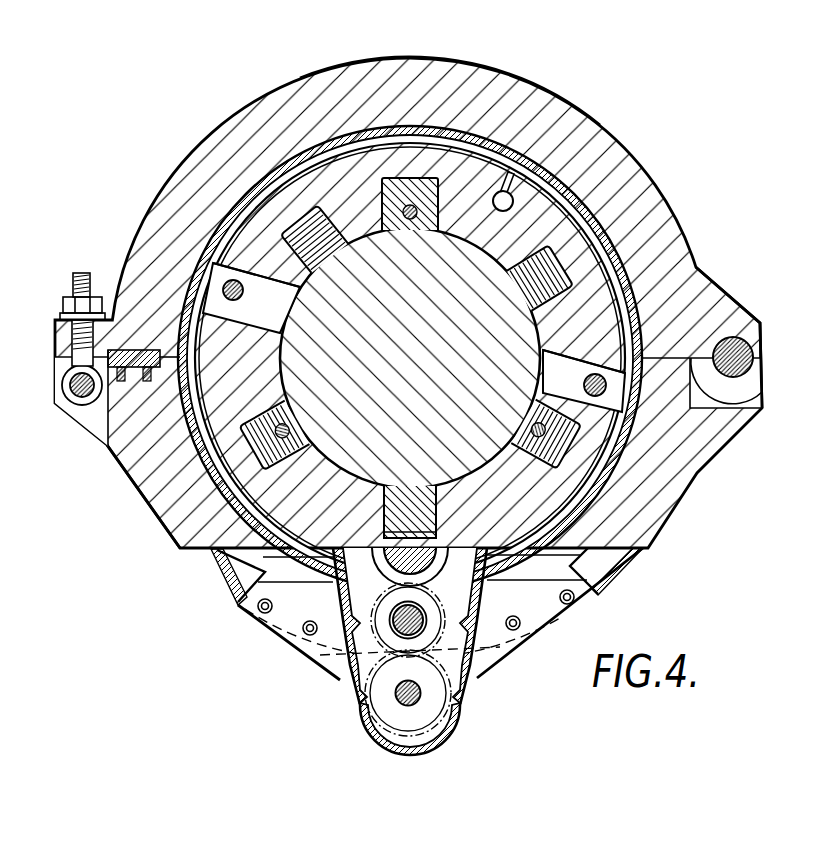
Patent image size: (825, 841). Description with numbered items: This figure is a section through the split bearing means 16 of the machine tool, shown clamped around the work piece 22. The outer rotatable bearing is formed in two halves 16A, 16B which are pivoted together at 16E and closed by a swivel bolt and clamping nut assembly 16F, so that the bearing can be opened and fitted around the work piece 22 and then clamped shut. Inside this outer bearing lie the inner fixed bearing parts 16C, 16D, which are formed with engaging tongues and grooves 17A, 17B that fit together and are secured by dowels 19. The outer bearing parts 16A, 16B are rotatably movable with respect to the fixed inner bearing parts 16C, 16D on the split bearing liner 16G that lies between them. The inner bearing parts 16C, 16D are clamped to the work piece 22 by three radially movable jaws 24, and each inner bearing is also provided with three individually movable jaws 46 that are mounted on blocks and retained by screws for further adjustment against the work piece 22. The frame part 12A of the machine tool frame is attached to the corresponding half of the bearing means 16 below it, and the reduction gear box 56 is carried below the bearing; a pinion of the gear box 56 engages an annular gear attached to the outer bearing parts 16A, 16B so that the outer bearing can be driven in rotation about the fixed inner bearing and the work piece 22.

The split bearing means 16 is at (462, 56).
The outer rotatable bearing part 16A is at (162, 526).
The outer rotatable bearing part 16B is at (584, 117).
The inner fixed bearing part 16C is at (546, 217).
The inner fixed bearing part 16D is at (132, 478).
The pivot 16E is at (752, 366).
The swivel bolt and clamping nut assembly 16F is at (72, 293).
The split bearing liner 16G is at (729, 337).
The tongue 17A is at (205, 260).
The groove 17B is at (233, 265).
The dowel 19 is at (210, 293).
The work piece 22 is at (410, 367).
The radially movable jaw 24 is at (567, 433).
The individually movable jaw 46 is at (570, 270).
The frame part 12A is at (205, 576).
The reduction gear box 56 is at (470, 713).